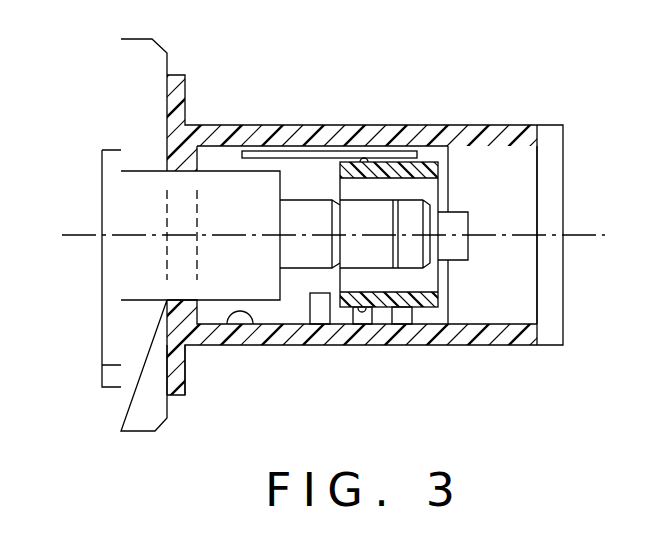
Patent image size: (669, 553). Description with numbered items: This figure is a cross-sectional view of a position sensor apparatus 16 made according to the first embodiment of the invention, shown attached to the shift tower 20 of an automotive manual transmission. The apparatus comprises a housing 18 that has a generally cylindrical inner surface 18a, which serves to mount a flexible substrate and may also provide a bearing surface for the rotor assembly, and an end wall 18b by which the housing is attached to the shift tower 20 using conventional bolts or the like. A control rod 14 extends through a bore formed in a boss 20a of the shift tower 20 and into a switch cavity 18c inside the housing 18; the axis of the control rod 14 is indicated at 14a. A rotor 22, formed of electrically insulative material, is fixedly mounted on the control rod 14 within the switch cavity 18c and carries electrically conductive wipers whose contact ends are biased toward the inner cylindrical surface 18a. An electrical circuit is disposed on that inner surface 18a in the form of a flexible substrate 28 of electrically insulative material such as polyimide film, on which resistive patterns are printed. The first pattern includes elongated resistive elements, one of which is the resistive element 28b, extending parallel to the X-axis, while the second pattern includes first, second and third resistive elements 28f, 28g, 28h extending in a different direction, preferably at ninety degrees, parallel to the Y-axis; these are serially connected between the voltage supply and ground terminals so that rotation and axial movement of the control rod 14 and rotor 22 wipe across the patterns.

The position sensor apparatus 16 is at (464, 77).
The shift tower 20 is at (132, 403).
The boss 20a is at (132, 270).
The flexible substrate 28 is at (208, 310).
The resistive element 28b is at (280, 154).
The resistive element 28f is at (403, 318).
The resistive element 28g is at (362, 318).
The resistive element 28h is at (322, 318).
The housing 18 is at (378, 125).
The inner surface 18a is at (250, 328).
The end wall 18b is at (180, 380).
The switch cavity 18c is at (468, 170).
The control rod 14 is at (313, 200).
The shaft axis 14a is at (590, 235).
The rotor 22 is at (427, 305).